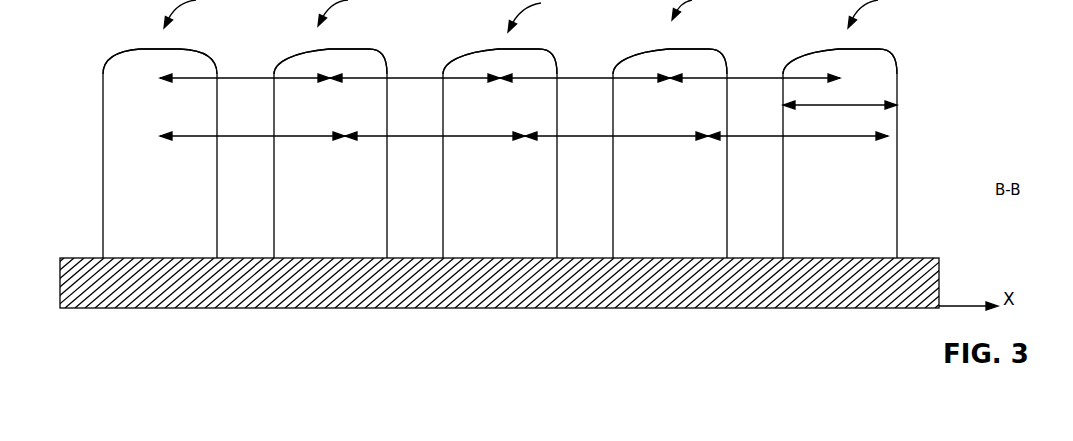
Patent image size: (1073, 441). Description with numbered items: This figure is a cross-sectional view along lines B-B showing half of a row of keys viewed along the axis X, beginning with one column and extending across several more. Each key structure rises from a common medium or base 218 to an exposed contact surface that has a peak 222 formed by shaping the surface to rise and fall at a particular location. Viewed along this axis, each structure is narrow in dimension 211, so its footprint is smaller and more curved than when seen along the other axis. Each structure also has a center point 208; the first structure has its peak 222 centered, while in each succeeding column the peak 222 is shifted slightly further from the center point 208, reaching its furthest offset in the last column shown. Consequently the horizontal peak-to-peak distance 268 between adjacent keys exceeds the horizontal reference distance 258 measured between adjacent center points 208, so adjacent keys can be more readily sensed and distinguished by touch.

The center point 208 is at (160, 49).
The peak 222 is at (163, 50).
The horizontal reference distance 258 is at (500, 86).
The horizontal peak-to-peak distance 268 is at (524, 143).
The dimension 211 is at (840, 112).
The substrate 218 is at (499, 283).